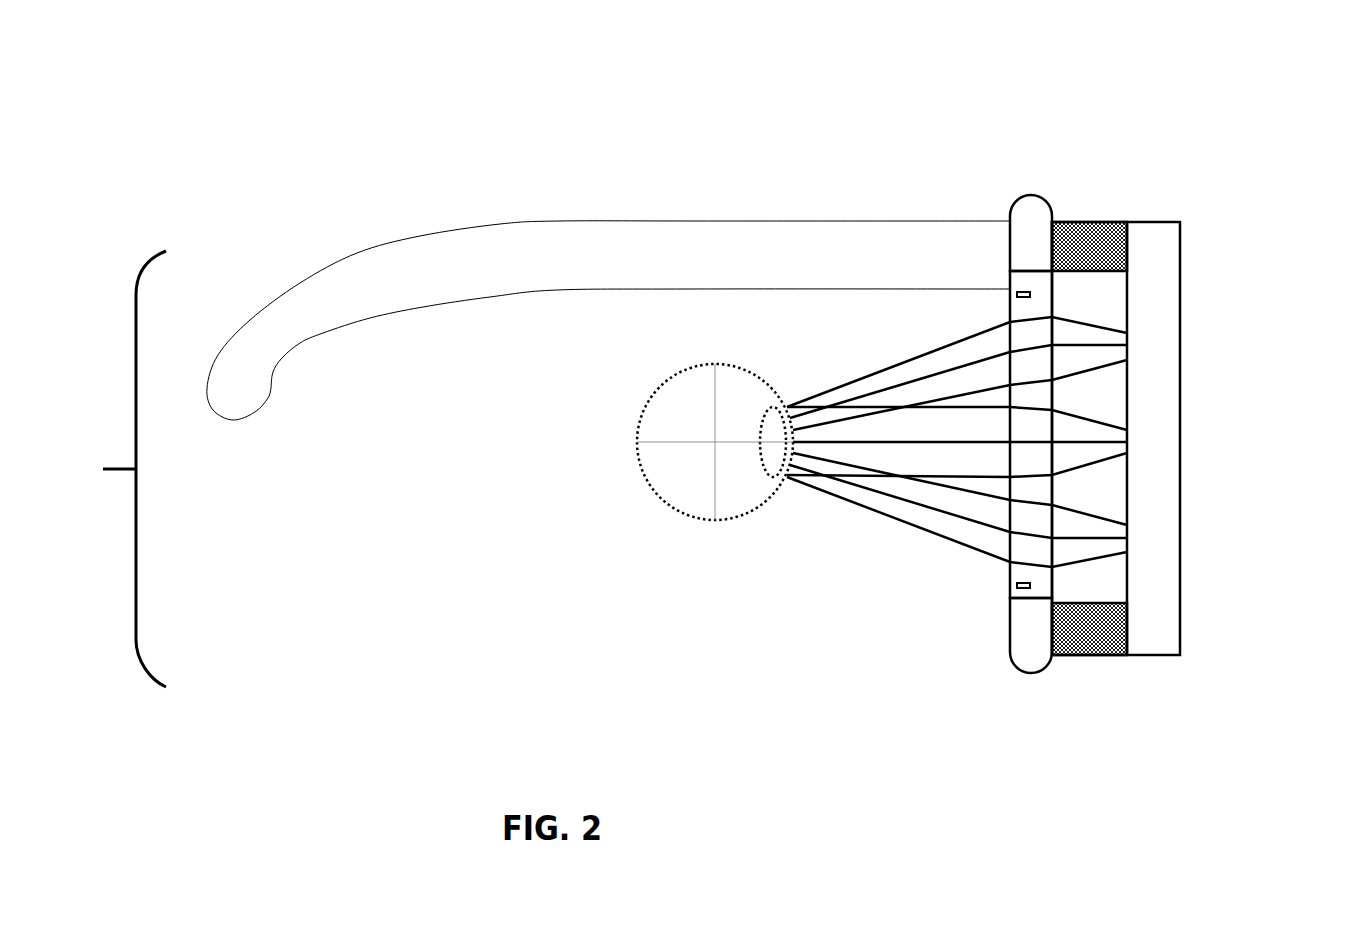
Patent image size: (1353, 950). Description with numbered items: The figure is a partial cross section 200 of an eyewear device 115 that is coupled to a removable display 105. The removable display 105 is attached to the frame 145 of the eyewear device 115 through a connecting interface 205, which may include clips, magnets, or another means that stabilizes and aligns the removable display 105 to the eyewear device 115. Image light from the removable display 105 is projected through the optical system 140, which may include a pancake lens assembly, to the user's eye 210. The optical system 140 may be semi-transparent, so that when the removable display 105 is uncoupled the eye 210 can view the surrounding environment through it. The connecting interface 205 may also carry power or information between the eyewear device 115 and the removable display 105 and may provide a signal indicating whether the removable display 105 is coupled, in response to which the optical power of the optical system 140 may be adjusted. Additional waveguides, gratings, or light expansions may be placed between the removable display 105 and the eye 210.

The partial cross section 200 is at (853, 38).
The eyewear device 115 is at (103, 469).
The frame 145 is at (659, 220).
The eye 210 is at (672, 376).
The optical system 140 is at (1008, 270).
The removable display 105 is at (1180, 250).
The connecting interface 205 is at (1105, 653).